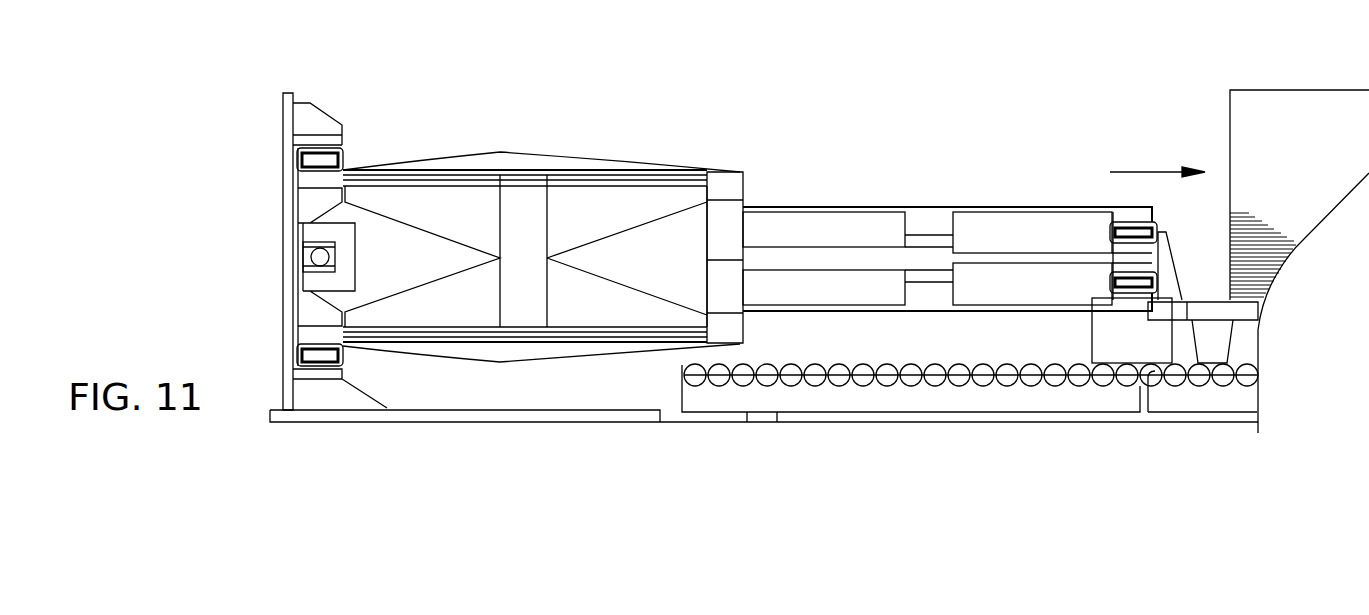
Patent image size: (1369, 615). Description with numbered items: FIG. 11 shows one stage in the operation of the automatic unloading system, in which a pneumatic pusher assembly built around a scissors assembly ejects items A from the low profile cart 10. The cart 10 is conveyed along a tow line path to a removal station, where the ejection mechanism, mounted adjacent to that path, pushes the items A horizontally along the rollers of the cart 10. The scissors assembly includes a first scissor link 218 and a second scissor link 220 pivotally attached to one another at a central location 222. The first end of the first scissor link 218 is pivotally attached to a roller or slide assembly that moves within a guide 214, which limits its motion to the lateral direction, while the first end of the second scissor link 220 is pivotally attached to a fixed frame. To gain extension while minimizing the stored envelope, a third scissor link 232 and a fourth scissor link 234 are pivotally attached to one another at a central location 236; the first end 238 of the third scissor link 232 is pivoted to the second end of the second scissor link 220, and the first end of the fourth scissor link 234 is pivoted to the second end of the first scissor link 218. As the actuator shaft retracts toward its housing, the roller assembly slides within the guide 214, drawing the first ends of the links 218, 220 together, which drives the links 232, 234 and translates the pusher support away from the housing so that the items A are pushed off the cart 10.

The cart 10 is at (710, 412).
The guide 214 is at (338, 158).
The first scissor link 218 is at (690, 175).
The second scissor link 220 is at (593, 187).
The central location 222 is at (525, 178).
The third scissor link 232 is at (983, 212).
The fourth scissor link 234 is at (1015, 260).
The central location 236 is at (930, 220).
The first end of the third scissor link 238 is at (728, 188).
The items A is at (1267, 112).